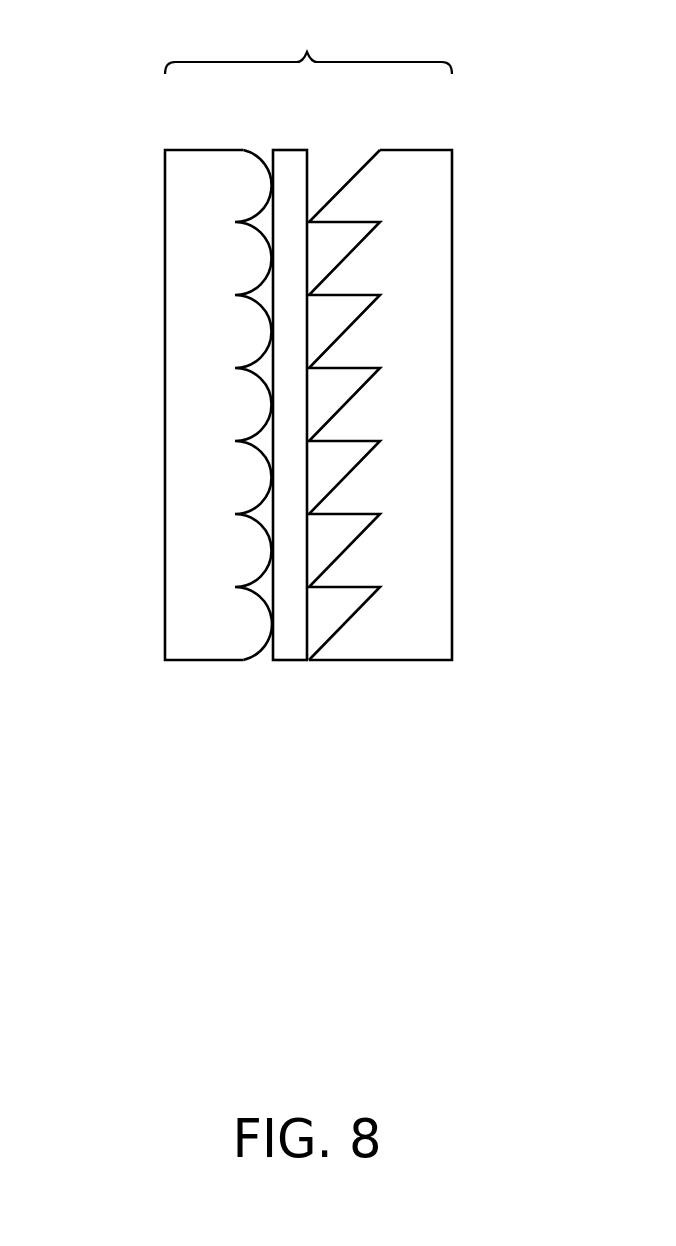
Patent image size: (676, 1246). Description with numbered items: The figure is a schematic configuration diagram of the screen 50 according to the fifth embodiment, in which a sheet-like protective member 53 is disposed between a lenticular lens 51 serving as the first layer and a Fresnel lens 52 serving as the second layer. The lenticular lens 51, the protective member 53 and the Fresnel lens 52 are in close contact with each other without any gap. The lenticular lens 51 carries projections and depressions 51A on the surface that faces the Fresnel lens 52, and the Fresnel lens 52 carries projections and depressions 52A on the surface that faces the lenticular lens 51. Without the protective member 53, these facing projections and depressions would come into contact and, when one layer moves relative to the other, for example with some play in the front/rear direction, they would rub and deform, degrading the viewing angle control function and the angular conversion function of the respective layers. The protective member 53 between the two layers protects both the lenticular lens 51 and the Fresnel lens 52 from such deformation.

The optical sheet assembly 50 is at (289, 44).
The lenticular lens 51 is at (207, 148).
The projections and depressions of the lenticular lens 51A is at (268, 311).
The Fresnel lens 52 is at (417, 148).
The projections and depressions of the Fresnel lens 52A is at (350, 327).
The protective member 53 is at (293, 148).